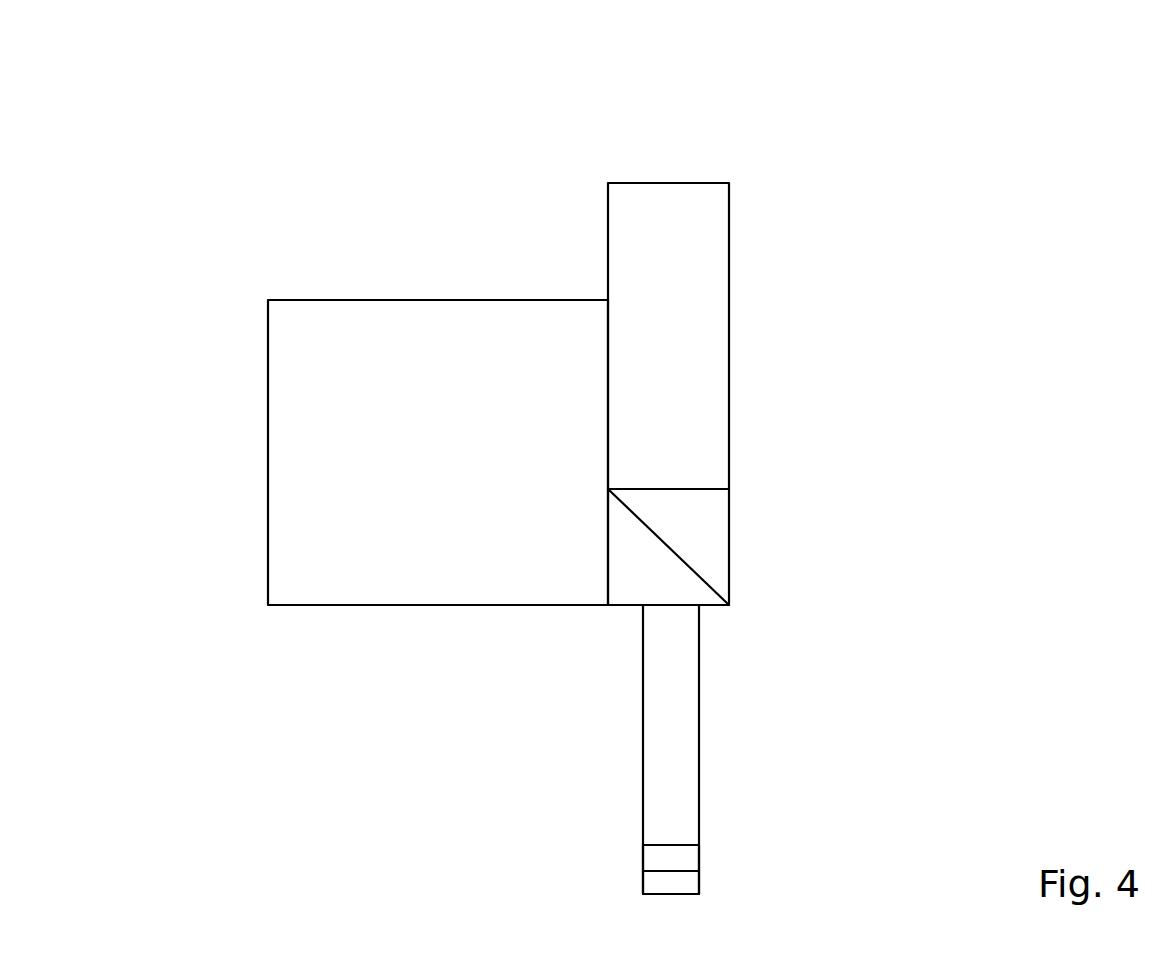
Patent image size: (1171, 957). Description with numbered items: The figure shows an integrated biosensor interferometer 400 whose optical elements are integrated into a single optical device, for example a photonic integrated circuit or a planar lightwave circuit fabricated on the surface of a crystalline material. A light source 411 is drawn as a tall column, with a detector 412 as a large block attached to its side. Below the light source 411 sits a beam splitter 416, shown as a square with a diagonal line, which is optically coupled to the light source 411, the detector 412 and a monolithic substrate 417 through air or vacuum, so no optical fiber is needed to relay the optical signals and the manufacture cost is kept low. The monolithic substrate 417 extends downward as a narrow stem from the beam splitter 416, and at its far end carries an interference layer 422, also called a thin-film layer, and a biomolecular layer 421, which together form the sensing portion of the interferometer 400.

The integrated biosensor interferometer 400 is at (512, 44).
The light source 411 is at (690, 187).
The detector 412 is at (327, 302).
The beam splitter 416 is at (730, 565).
The monolithic substrate 417 is at (699, 733).
The biomolecular layer 421 is at (698, 888).
The interference layer 422 is at (643, 855).